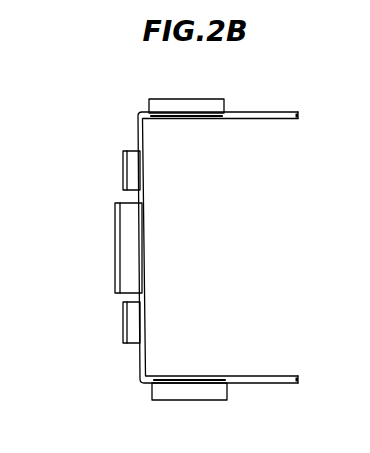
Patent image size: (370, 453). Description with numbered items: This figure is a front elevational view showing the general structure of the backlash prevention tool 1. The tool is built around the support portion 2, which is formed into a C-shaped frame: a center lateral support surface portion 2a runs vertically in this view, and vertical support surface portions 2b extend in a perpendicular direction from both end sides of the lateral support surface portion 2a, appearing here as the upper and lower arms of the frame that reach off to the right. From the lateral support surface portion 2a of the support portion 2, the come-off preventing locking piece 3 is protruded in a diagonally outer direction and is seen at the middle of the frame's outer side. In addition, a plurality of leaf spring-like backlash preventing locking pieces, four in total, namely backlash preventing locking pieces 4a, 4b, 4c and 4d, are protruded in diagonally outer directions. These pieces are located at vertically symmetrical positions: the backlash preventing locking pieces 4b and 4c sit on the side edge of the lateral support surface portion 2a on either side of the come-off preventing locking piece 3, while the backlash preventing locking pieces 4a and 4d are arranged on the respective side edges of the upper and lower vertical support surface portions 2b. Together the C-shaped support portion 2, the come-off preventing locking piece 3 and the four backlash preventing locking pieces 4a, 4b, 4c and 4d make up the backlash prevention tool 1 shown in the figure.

The backlash prevention tool 1 is at (135, 134).
The support portion 2 is at (135, 355).
The lateral support surface portion 2a is at (137, 371).
The vertical support surface portions 2b is at (265, 112).
The come-off preventing locking piece 3 is at (122, 252).
The backlash preventing locking piece 4a is at (192, 100).
The backlash preventing locking piece 4b is at (125, 175).
The backlash preventing locking piece 4c is at (128, 323).
The backlash preventing locking piece 4d is at (194, 400).